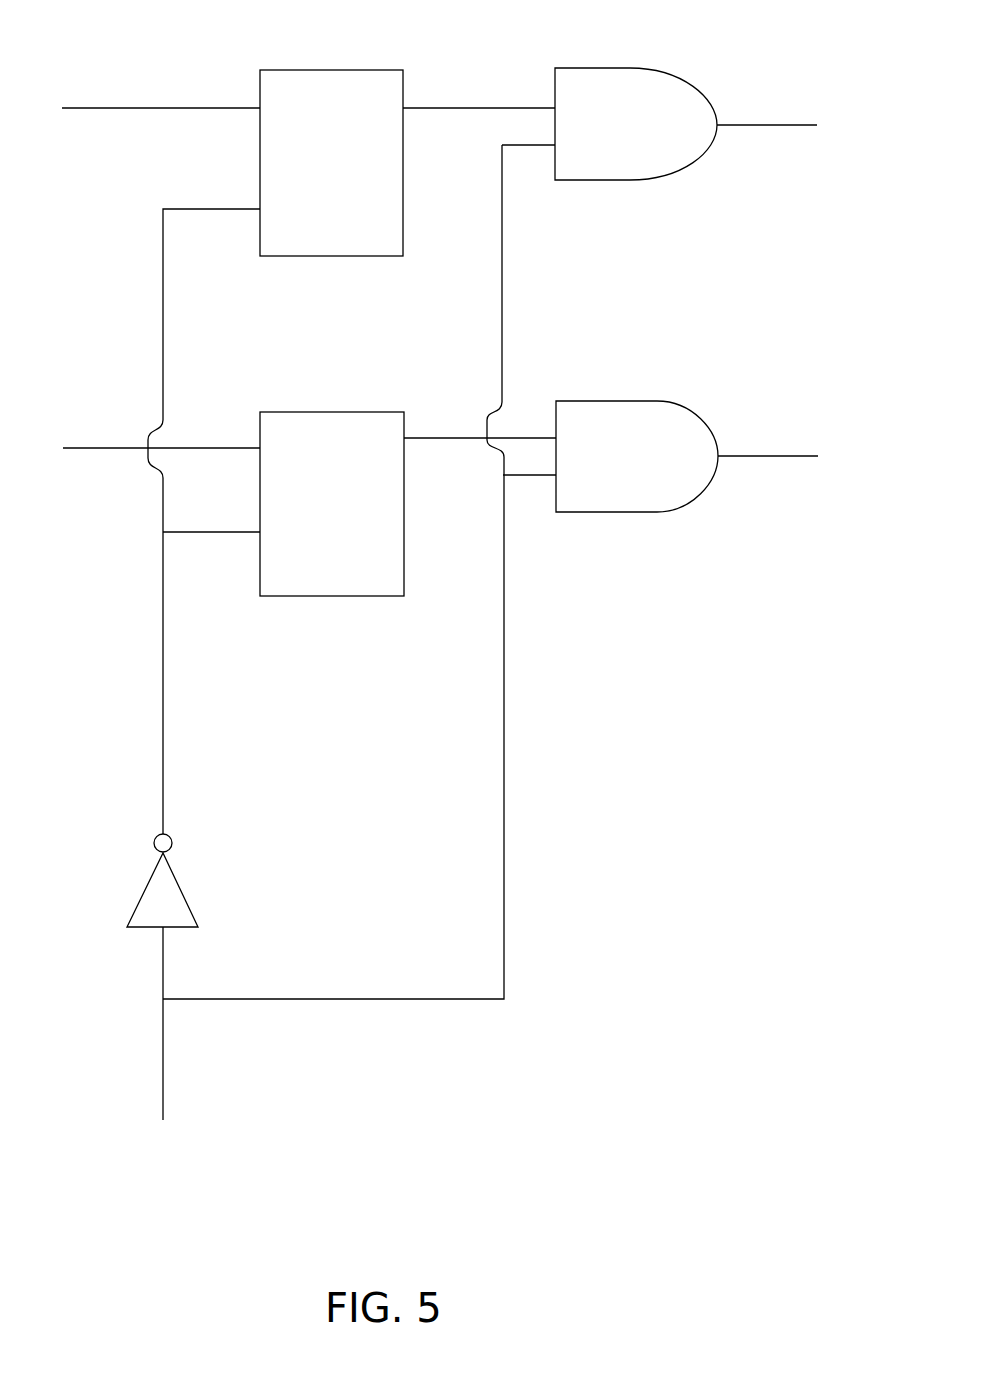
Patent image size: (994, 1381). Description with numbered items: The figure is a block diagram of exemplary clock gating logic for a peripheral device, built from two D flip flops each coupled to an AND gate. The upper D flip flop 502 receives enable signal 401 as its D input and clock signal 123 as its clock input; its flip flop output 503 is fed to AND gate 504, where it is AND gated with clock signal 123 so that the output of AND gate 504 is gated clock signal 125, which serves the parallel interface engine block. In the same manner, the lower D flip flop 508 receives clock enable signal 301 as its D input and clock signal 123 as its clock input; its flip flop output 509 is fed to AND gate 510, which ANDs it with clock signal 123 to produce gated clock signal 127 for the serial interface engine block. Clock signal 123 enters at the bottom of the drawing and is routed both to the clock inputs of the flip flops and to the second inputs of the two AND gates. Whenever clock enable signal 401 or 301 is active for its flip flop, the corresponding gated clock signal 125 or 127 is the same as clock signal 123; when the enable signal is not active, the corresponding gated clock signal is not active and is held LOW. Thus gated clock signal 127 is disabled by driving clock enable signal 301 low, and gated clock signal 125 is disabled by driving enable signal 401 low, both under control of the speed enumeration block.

The enable signal 401 is at (107, 108).
The D flip flop 502 is at (303, 70).
The flip flop output 503 is at (457, 108).
The AND gate 504 is at (634, 68).
The gated clock signal 125 is at (780, 125).
The clock enable signal 301 is at (91, 448).
The D flip flop 508 is at (306, 596).
The flip flop output 509 is at (452, 438).
The AND gate 510 is at (618, 401).
The gated clock signal 127 is at (792, 456).
The clock signal 123 is at (163, 1057).